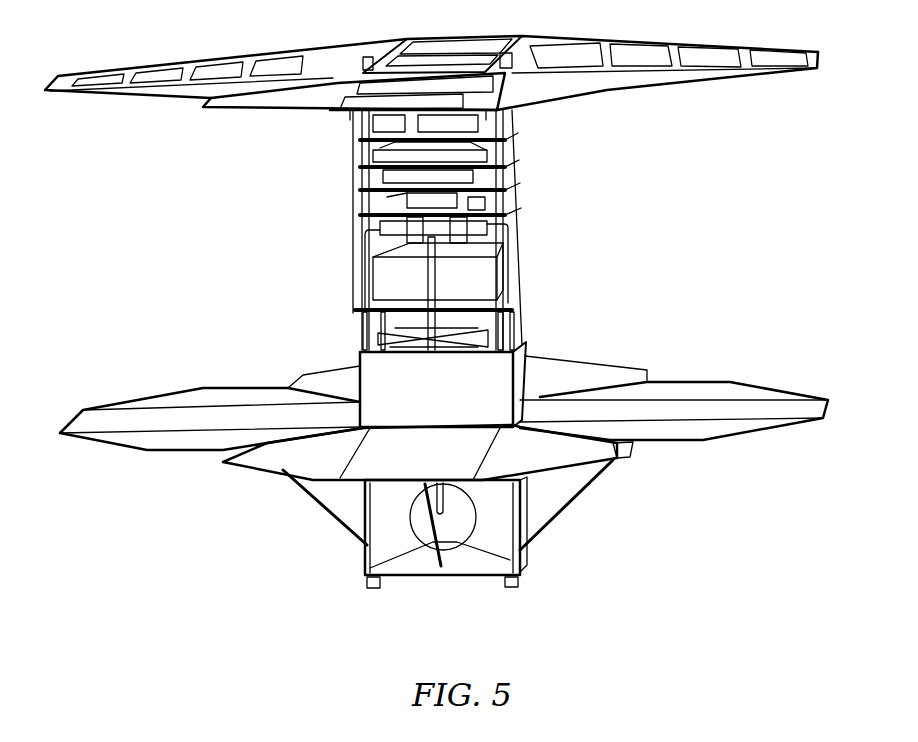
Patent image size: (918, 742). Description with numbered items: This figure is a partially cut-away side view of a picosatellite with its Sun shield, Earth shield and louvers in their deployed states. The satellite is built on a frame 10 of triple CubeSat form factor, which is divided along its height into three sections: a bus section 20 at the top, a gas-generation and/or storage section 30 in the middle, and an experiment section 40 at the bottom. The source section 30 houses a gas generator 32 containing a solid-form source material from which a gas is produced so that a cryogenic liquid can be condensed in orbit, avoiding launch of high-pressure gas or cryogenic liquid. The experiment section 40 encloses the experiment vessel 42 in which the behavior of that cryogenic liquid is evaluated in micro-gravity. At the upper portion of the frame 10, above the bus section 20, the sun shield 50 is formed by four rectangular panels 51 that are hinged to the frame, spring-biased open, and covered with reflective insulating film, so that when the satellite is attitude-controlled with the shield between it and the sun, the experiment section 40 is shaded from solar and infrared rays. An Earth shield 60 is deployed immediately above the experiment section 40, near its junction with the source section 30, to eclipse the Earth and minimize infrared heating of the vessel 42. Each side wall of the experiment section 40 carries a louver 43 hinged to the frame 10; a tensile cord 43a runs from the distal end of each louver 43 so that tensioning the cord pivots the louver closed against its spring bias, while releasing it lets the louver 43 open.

The frame 10 is at (578, 164).
The bus section 20 is at (352, 208).
The gas-generation and/or storage section 30 is at (360, 332).
The gas generator 32 is at (416, 393).
The experiment section 40 is at (363, 502).
The experiment vessel 42 is at (446, 516).
The louver 43 is at (621, 459).
The tensile cord 43a is at (323, 508).
The sun shield 50 is at (215, 106).
The rectangular panels 51 is at (455, 38).
The Earth shield 60 is at (178, 450).